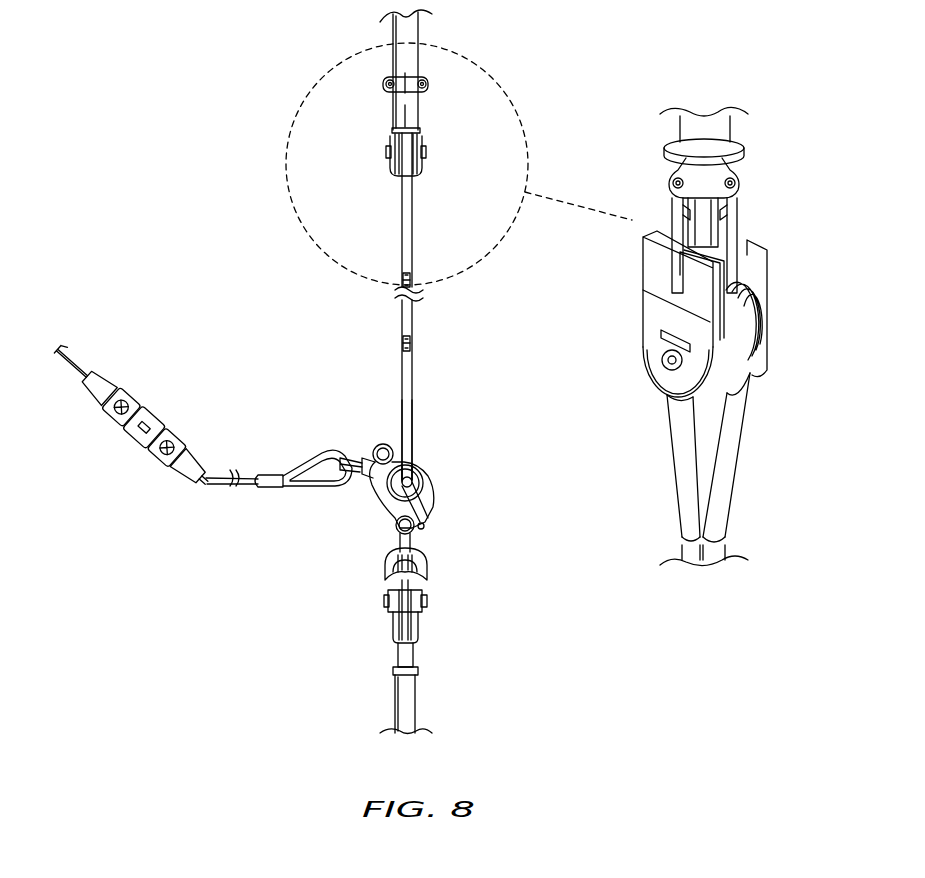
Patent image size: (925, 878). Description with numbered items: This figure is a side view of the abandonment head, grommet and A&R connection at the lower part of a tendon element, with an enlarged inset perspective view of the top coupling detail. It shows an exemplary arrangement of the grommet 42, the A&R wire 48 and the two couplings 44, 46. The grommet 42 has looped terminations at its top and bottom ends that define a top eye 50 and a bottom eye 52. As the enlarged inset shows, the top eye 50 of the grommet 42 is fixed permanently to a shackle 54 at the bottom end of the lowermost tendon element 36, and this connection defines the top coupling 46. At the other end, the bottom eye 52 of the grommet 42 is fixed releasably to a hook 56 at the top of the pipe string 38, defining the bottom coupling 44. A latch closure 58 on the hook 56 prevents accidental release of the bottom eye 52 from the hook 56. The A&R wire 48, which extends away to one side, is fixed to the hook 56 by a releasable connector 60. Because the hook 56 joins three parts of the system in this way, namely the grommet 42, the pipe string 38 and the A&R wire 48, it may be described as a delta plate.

The lowermost tendon element 36 is at (419, 33).
The pipe string 38 is at (417, 712).
The grommet 42 is at (148, 240).
The bottom coupling 44 is at (476, 574).
The top coupling 46 is at (434, 128).
The A&R wire 48 is at (73, 362).
The top eye 50 is at (413, 195).
The bottom eye 52 is at (413, 423).
The shackle 54 is at (743, 297).
The hook 56 is at (378, 505).
The latch closure 58 is at (430, 523).
The releasable connector 60 is at (115, 445).